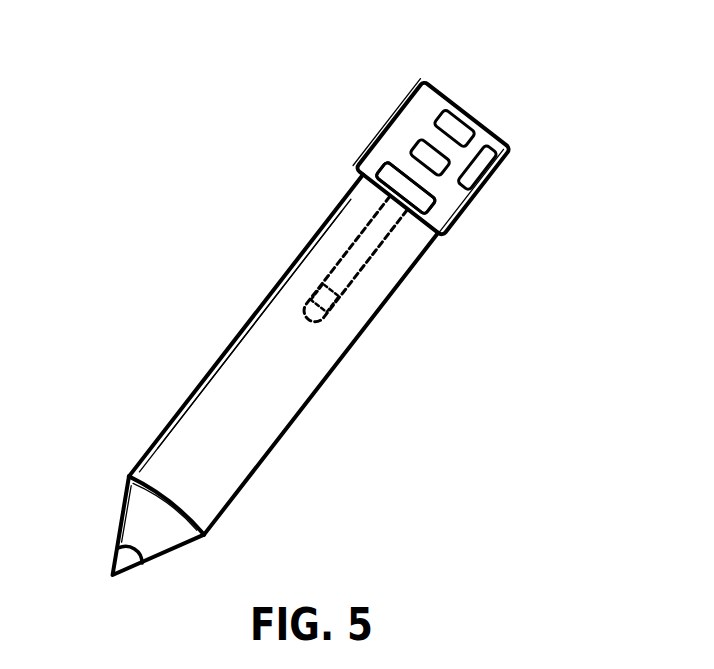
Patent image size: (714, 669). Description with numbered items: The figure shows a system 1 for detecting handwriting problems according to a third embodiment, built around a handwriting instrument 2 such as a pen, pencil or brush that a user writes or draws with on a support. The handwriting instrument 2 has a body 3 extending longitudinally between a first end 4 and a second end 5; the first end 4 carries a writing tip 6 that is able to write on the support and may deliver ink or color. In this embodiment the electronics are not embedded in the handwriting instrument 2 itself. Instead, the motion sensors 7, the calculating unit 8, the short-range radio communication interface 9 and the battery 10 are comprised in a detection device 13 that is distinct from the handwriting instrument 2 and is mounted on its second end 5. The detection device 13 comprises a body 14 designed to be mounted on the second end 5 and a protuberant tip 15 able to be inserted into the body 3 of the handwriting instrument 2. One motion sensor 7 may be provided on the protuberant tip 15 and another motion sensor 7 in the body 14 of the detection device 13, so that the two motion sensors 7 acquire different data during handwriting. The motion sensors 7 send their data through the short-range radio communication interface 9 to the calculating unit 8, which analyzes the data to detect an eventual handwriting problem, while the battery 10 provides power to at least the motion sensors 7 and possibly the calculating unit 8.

The system 1 is at (363, 480).
The handwriting instrument 2 is at (165, 425).
The body 3 is at (217, 425).
The first end 4 is at (142, 507).
The second end 5 is at (420, 203).
The writing tip 6 is at (122, 558).
The motion sensor 7 is at (423, 153).
The calculating unit 8 is at (460, 137).
The short-range radio communication interface 9 is at (477, 176).
The battery 10 is at (420, 203).
The detection device 13 is at (402, 100).
The body 14 is at (447, 232).
The protuberant tip 15 is at (307, 305).